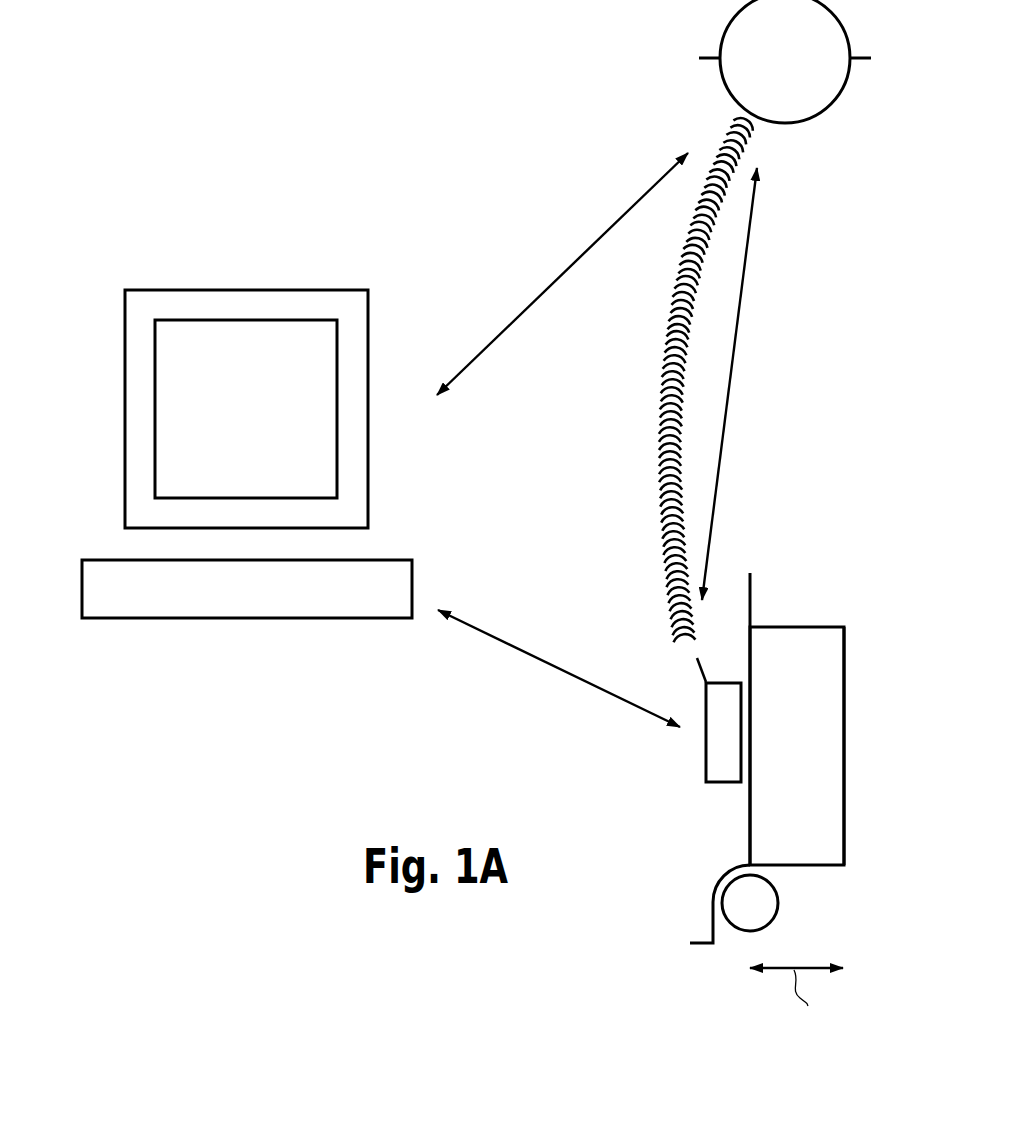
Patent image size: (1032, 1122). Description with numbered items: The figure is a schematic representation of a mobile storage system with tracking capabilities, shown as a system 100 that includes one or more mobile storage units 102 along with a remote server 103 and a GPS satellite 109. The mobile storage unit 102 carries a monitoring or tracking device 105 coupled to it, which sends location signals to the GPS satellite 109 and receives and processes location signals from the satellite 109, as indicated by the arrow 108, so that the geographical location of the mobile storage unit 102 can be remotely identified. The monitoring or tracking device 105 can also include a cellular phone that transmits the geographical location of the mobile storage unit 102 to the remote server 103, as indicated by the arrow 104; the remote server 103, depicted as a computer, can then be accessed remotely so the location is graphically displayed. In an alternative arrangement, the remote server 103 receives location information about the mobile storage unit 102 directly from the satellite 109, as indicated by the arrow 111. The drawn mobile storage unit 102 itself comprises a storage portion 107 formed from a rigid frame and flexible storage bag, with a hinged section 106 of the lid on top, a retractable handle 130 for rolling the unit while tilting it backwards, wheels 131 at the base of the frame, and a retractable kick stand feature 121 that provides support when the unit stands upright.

The system 100 is at (183, 107).
The mobile storage unit 102 is at (778, 545).
The remote server 103 is at (125, 405).
The arrow 104 is at (560, 670).
The monitoring or tracking device 105 is at (705, 768).
The hinged section 106 is at (815, 626).
The storage portion 107 is at (845, 687).
The arrow 108 is at (729, 400).
The GPS satellite 109 is at (812, 118).
The arrow 111 is at (567, 268).
The kick stand feature 121 is at (712, 915).
The retractable handle 130 is at (751, 597).
The wheels 131 is at (778, 900).